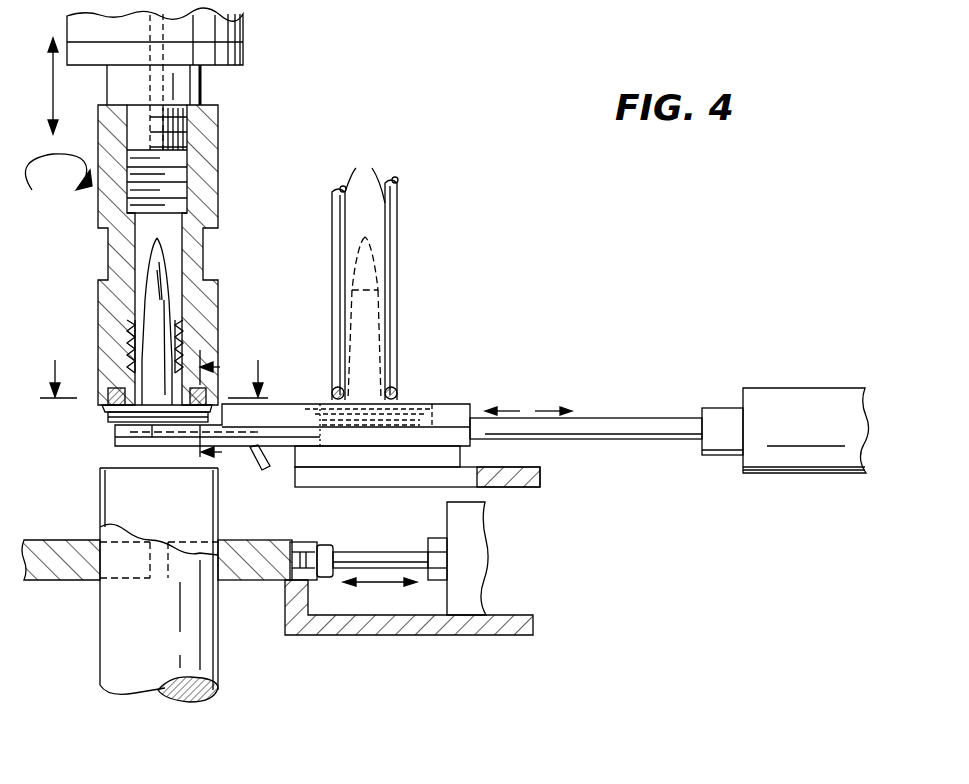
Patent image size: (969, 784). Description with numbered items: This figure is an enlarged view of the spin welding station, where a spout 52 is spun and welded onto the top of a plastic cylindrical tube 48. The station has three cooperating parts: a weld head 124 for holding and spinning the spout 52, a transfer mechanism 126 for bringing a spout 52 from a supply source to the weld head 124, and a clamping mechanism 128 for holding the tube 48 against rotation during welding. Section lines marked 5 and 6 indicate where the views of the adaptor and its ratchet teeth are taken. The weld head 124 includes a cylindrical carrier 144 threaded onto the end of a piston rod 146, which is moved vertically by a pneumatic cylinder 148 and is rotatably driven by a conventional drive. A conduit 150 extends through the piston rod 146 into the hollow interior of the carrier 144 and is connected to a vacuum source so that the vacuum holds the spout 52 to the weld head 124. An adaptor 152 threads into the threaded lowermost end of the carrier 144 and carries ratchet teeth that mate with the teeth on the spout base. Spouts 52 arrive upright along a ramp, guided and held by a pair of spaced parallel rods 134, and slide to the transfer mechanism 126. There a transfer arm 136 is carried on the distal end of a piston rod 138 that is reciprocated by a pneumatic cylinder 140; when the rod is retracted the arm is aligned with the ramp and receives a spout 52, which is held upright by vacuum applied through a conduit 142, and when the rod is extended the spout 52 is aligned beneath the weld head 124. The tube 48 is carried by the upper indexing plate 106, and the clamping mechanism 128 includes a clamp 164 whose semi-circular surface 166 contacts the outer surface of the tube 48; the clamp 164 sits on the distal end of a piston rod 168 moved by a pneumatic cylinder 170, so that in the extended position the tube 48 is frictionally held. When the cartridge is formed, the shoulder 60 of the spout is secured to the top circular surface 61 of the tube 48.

The section line 5- 5 is at (159, 366).
The section line 6- 6 is at (219, 413).
The plastic cylindrical tube 48 is at (153, 641).
The spout 52 is at (163, 268).
The shoulder 60 is at (100, 409).
The top circular surface 61 is at (100, 468).
The upper indexing plate 106 is at (85, 576).
The weld head 124 is at (282, 159).
The transfer mechanism 126 is at (452, 366).
The clamping mechanism 128 is at (271, 652).
The spaced parallel rods 134 is at (365, 270).
The transfer arm 136 is at (290, 410).
The piston rod 138 is at (610, 418).
The pneumatic cylinder 140 is at (835, 422).
The conduit 142 is at (150, 431).
The cylindrical carrier 144 is at (220, 203).
The piston rod 146 is at (207, 98).
The pneumatic cylinder 148 is at (245, 33).
The conduit 150 is at (165, 93).
The adaptor 152 is at (183, 338).
The clamp 164 is at (276, 540).
The semi-circular surface 166 is at (205, 582).
The piston rod 168 is at (380, 552).
The pneumatic cylinder 170 is at (488, 520).